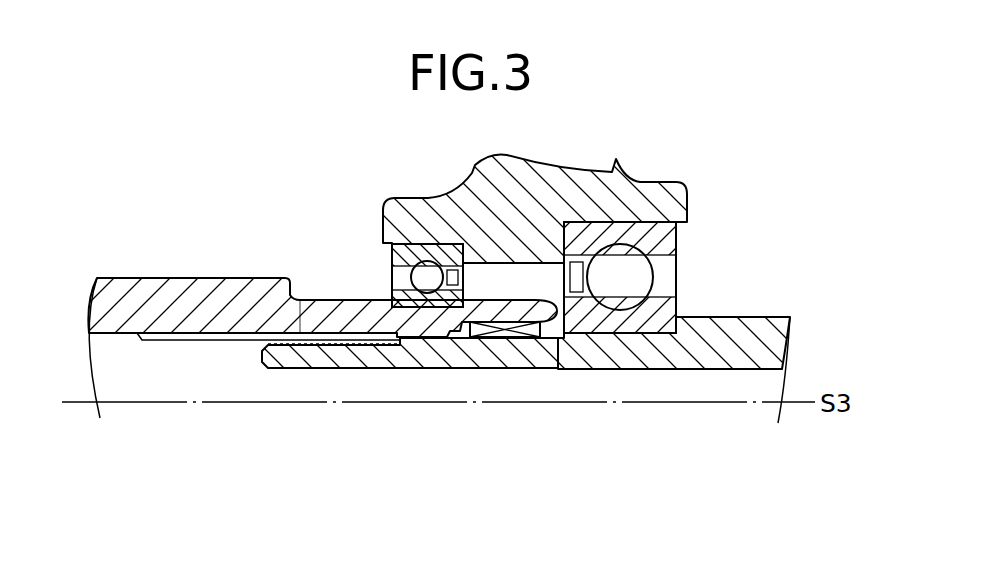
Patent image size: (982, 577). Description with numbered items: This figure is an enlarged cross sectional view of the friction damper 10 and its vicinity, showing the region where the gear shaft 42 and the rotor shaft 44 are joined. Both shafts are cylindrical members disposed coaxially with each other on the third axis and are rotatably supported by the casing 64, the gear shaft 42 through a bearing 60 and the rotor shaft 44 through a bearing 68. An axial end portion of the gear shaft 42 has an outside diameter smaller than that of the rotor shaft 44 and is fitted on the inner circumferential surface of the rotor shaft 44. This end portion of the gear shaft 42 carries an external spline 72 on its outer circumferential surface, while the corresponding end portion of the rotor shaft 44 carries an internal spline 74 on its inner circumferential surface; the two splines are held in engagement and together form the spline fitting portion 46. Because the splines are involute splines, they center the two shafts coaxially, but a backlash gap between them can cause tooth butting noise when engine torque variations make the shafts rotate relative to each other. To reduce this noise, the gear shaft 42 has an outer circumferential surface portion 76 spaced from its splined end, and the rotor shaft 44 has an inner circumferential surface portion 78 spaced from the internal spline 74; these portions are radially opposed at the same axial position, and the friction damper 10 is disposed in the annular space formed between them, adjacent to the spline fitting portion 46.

The friction damper 10 is at (488, 347).
The gear shaft 42 is at (716, 348).
The rotor shaft 44 is at (162, 296).
The spline fitting portion 46 is at (318, 333).
The bearing 60 is at (652, 277).
The casing 64 is at (523, 188).
The bearing 68 is at (427, 270).
The external spline 72 is at (373, 340).
The internal spline 74 is at (177, 338).
The outer circumferential surface portion 76 is at (516, 352).
The inner circumferential surface portion 78 is at (505, 334).